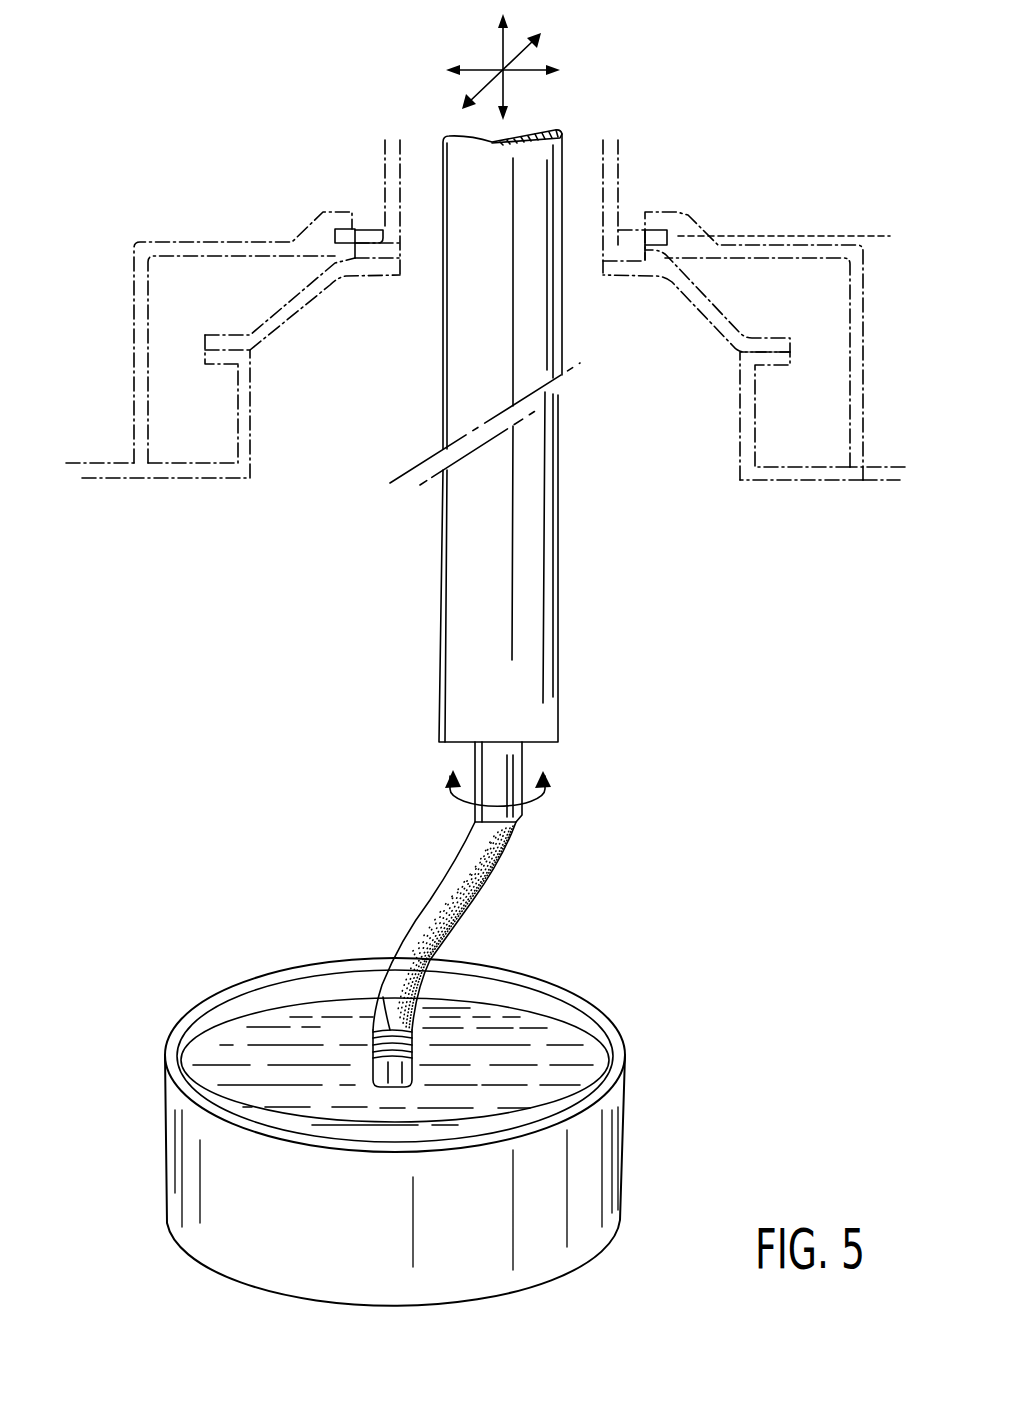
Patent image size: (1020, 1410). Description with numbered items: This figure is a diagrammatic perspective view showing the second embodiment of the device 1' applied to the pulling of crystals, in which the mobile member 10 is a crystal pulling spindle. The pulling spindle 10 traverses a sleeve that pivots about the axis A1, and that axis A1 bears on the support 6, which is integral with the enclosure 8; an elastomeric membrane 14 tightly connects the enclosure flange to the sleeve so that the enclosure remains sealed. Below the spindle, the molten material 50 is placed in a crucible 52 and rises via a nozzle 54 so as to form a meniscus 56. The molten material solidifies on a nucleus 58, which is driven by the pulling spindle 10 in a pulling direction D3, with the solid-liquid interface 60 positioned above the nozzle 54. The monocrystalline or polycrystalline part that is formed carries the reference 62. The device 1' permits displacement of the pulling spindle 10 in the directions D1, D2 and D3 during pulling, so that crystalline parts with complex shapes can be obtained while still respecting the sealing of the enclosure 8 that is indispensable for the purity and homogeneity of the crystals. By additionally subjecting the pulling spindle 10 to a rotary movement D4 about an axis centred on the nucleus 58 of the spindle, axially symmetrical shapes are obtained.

The device 1' is at (91, 176).
The support 6 is at (210, 242).
The enclosure 8 is at (107, 470).
The elastomeric membrane 14 is at (299, 303).
The mobile member 10 is at (535, 543).
The axis A1 is at (880, 236).
The direction D1 is at (540, 40).
The direction D2 is at (475, 72).
The pulling direction D3 is at (500, 44).
The rotary movement D4 is at (545, 792).
The nucleus 58 is at (495, 767).
The monocrystalline or polycrystalline part 62 is at (473, 877).
The solid-liquid interface 60 is at (390, 1030).
The meniscus 56 is at (373, 1040).
The nozzle 54 is at (387, 1080).
The crucible 52 is at (208, 1013).
The molten material 50 is at (560, 1045).